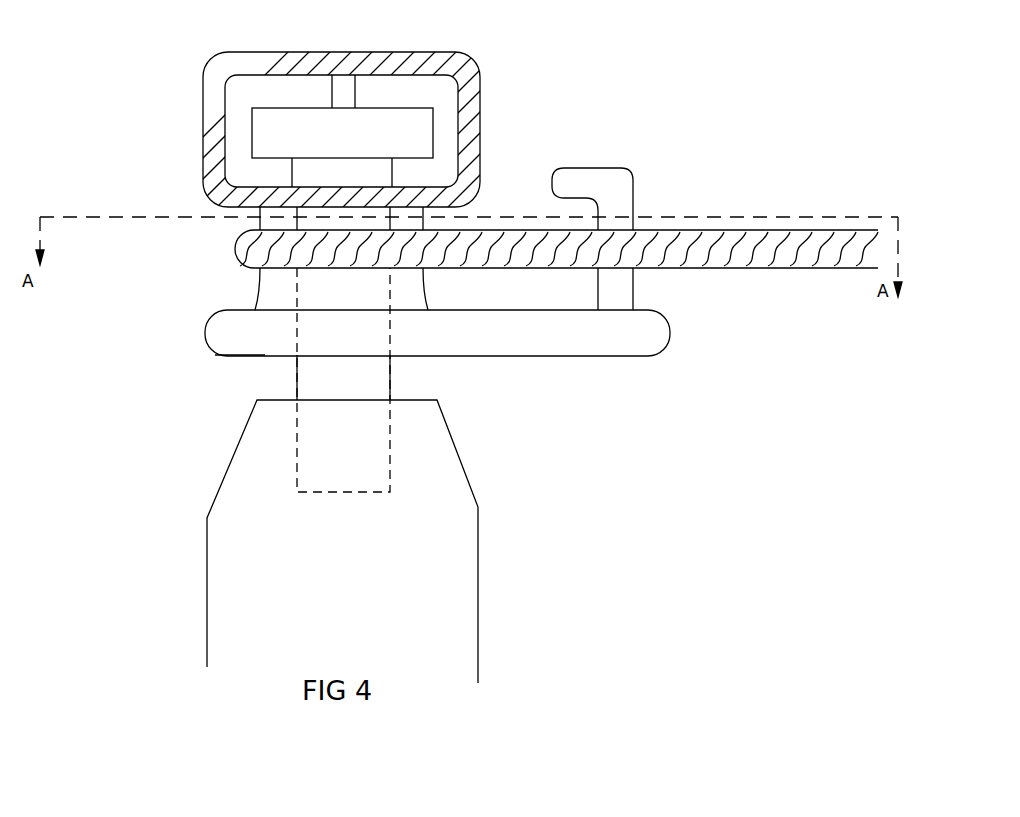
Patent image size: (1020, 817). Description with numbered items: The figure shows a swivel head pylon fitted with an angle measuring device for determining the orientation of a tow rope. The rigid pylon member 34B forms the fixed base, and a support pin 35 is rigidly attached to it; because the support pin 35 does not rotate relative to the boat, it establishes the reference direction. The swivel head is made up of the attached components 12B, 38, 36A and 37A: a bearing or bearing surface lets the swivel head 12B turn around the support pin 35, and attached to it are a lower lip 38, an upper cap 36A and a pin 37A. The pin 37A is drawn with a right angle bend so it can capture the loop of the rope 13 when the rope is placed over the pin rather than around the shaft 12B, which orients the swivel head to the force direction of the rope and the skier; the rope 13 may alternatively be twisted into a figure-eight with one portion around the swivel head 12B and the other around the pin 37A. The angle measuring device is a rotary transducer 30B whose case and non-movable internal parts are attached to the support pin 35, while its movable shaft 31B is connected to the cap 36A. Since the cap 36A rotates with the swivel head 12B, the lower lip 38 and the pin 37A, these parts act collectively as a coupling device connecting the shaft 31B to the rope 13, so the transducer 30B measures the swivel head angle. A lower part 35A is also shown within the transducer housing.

The upper cap 36A is at (295, 50).
The movable shaft 31B is at (378, 90).
The rotary transducer 30B is at (478, 117).
The lower mounting piece 35A is at (282, 170).
The pin 37A is at (633, 170).
The rope 13 is at (735, 270).
The swivel head 12B is at (258, 297).
The lower lip 38 is at (258, 356).
The support pin 35 is at (390, 385).
The rigid pylon member 34B is at (478, 566).